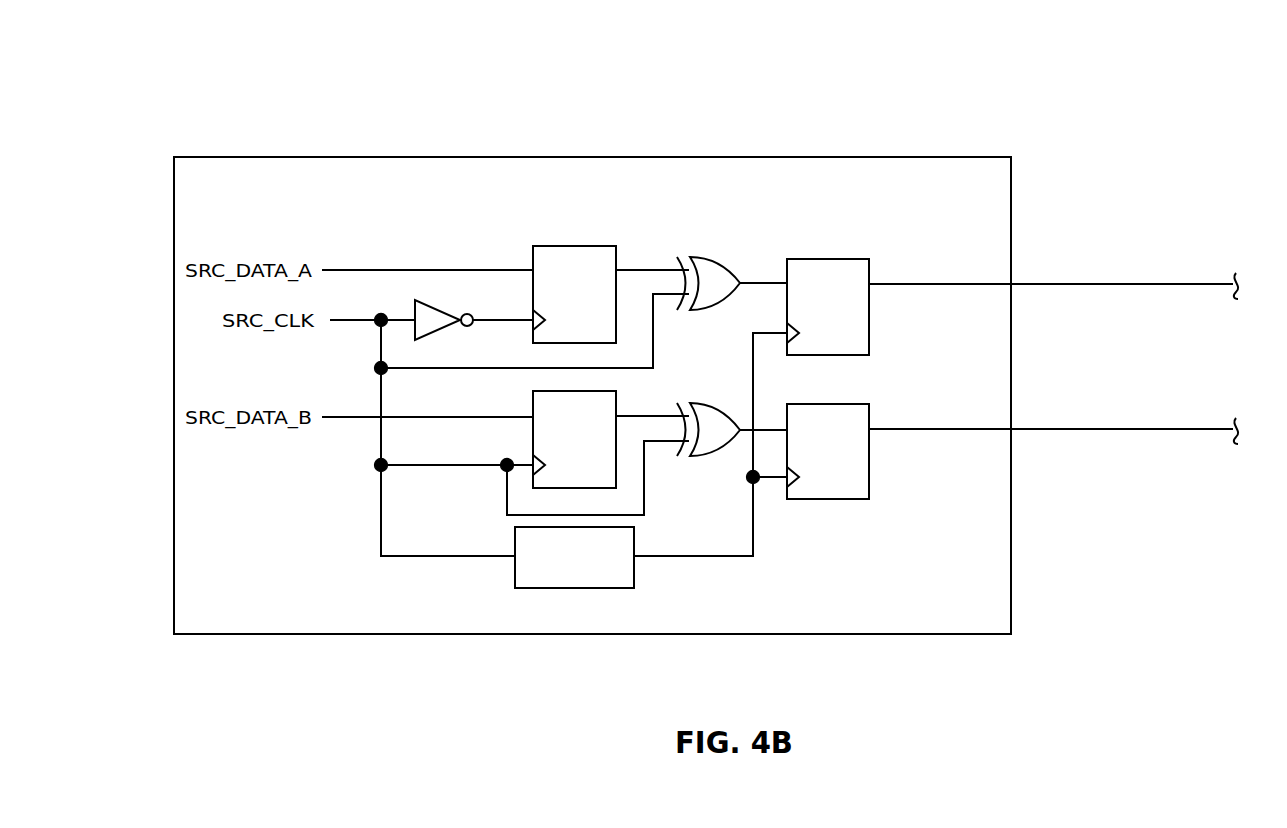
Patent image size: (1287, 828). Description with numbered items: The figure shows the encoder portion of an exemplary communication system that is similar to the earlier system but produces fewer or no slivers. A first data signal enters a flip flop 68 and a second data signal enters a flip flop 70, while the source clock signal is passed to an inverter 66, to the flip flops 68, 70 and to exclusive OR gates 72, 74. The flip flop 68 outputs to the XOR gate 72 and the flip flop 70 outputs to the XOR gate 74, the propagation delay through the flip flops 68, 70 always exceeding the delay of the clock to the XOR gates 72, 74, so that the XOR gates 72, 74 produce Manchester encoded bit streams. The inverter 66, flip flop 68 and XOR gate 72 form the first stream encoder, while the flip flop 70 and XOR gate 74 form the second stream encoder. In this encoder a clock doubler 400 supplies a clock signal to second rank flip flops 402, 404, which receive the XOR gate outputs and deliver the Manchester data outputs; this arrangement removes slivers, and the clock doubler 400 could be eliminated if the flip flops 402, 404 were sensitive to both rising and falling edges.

The inverter 66 is at (447, 311).
The flip flop 68 is at (616, 251).
The flip flop 70 is at (616, 477).
The exclusive OR (XOR) gate 72 is at (721, 262).
The exclusive OR (XOR) gate 74 is at (721, 408).
The clock doubler 400 is at (514, 575).
The second rank flip flop 402 is at (825, 259).
The second rank flip flop 404 is at (840, 500).